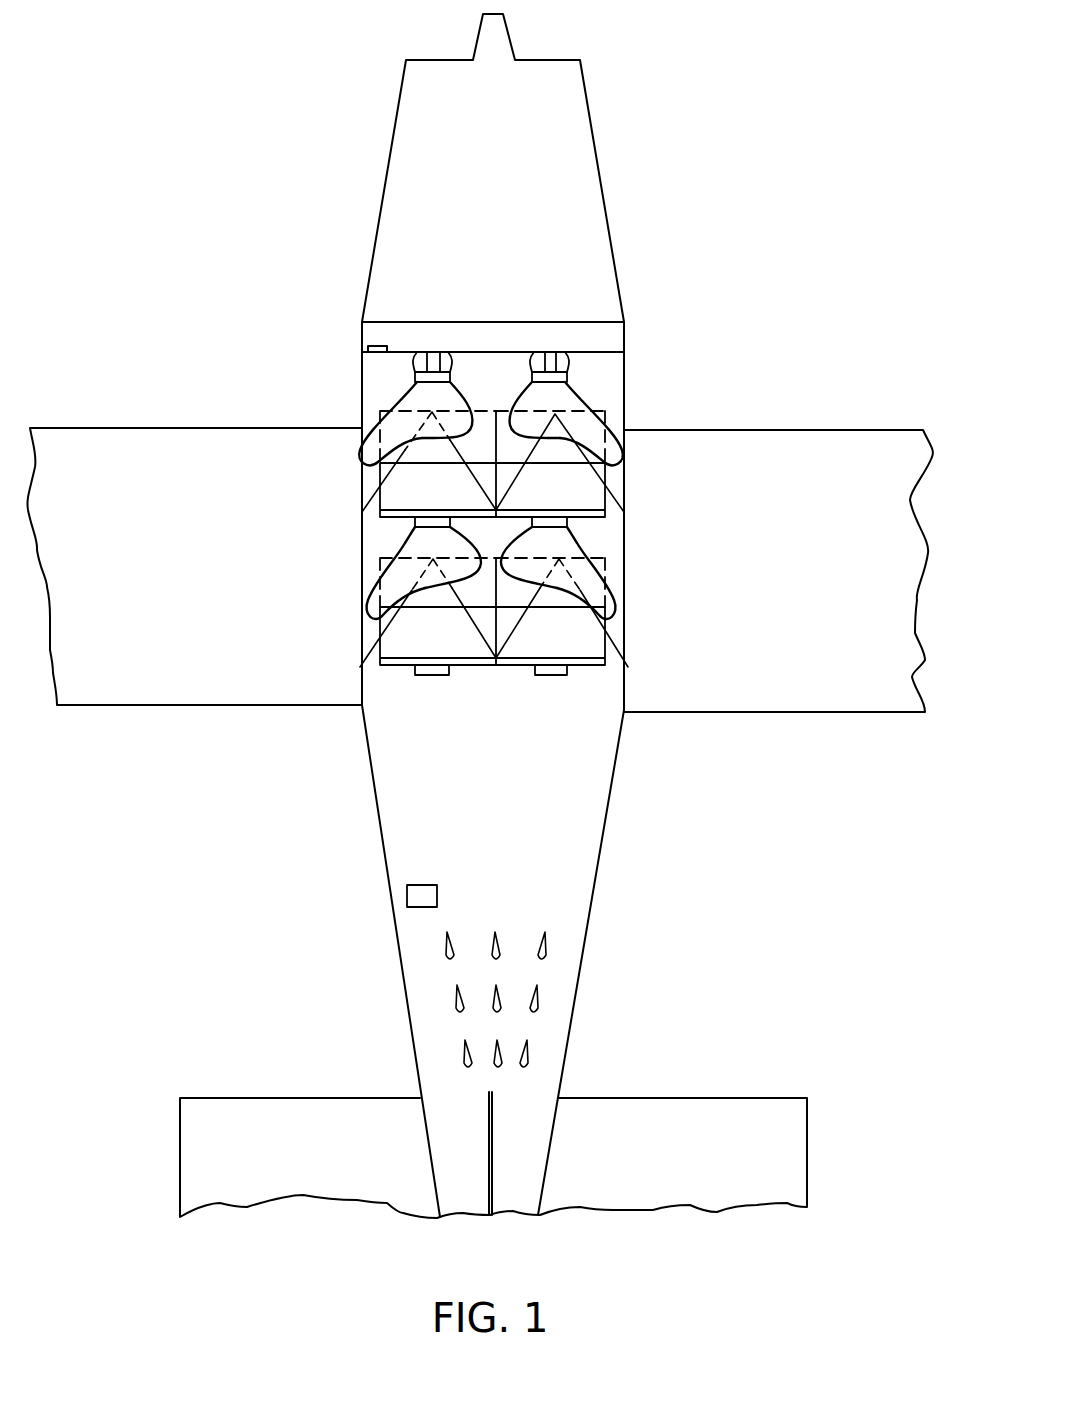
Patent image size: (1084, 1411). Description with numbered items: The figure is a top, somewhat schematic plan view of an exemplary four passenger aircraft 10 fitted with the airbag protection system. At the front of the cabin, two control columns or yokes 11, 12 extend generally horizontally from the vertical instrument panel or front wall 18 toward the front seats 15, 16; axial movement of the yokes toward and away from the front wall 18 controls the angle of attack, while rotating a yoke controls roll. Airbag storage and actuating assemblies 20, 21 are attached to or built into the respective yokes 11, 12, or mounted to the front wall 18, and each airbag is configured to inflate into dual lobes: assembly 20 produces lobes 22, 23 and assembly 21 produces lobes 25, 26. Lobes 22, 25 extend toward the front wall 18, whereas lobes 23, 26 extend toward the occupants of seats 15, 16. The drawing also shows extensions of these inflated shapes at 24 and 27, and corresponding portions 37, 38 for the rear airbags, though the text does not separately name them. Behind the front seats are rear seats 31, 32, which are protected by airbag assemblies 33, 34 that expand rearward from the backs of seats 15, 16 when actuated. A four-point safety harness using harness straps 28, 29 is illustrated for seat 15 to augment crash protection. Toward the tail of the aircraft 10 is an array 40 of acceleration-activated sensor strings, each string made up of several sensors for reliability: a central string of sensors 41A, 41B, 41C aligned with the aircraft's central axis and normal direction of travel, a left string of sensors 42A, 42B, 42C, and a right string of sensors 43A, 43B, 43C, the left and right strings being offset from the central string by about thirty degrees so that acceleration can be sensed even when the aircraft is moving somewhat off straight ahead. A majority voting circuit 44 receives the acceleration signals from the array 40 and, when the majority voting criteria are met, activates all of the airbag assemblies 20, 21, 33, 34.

The four passenger aircraft 10 is at (740, 200).
The control yoke 11 is at (367, 330).
The control yoke 12 is at (602, 334).
The seat 15 is at (362, 466).
The seat 16 is at (586, 492).
The front wall 18 is at (497, 330).
The airbag storage and actuating assembly 20 is at (383, 415).
The airbag storage and actuating assembly 21 is at (602, 396).
The airbag lobe 22 is at (452, 355).
The airbag lobe 23 is at (450, 403).
The plume lobe 24 is at (364, 450).
The airbag lobe 25 is at (572, 358).
The airbag lobe 26 is at (606, 405).
The plume lobe 27 is at (625, 450).
The harness strap 28 is at (365, 473).
The harness strap 29 is at (470, 483).
The rear seat 31 is at (403, 640).
The rear seat 32 is at (582, 640).
The airbag assembly 33 is at (378, 579).
The airbag assembly 34 is at (599, 573).
The plume lobe 37 is at (378, 608).
The plume lobe 38 is at (612, 592).
The sensor array 40 is at (486, 864).
The sensor 41A is at (494, 941).
The sensor 41B is at (499, 1000).
The sensor 41C is at (495, 1053).
The sensor 42A is at (445, 943).
The sensor 42B is at (455, 1002).
The sensor 42C is at (465, 1057).
The sensor 43A is at (545, 942).
The sensor 43B is at (535, 1003).
The sensor 43C is at (527, 1057).
The majority voting circuit 44 is at (407, 893).